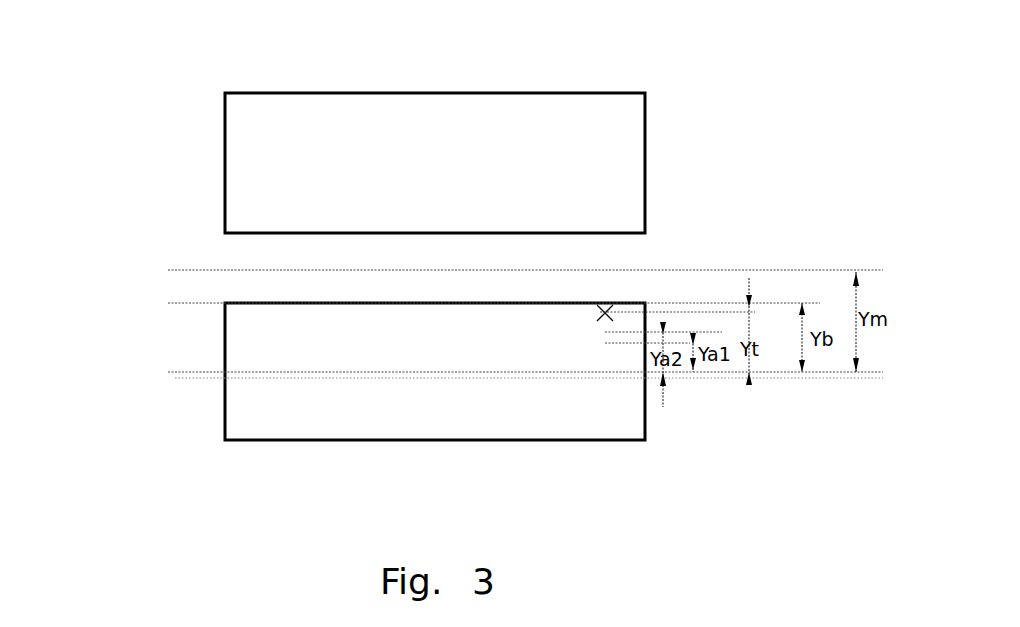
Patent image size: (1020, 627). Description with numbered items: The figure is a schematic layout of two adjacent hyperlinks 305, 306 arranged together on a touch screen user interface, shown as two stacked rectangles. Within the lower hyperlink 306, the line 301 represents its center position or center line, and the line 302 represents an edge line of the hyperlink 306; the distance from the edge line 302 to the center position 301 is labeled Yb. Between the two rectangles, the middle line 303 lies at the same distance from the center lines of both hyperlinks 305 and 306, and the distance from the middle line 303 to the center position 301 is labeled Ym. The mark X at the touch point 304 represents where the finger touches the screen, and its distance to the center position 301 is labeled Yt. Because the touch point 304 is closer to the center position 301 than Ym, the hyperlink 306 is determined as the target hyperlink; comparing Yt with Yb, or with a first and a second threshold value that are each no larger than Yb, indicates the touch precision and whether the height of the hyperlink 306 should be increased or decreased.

The center position 301 is at (193, 373).
The edge line 302 is at (188, 303).
The middle line 303 is at (188, 265).
The touch point 304 is at (605, 312).
The hyperlink 305 is at (553, 150).
The hyperlink 306 is at (267, 427).